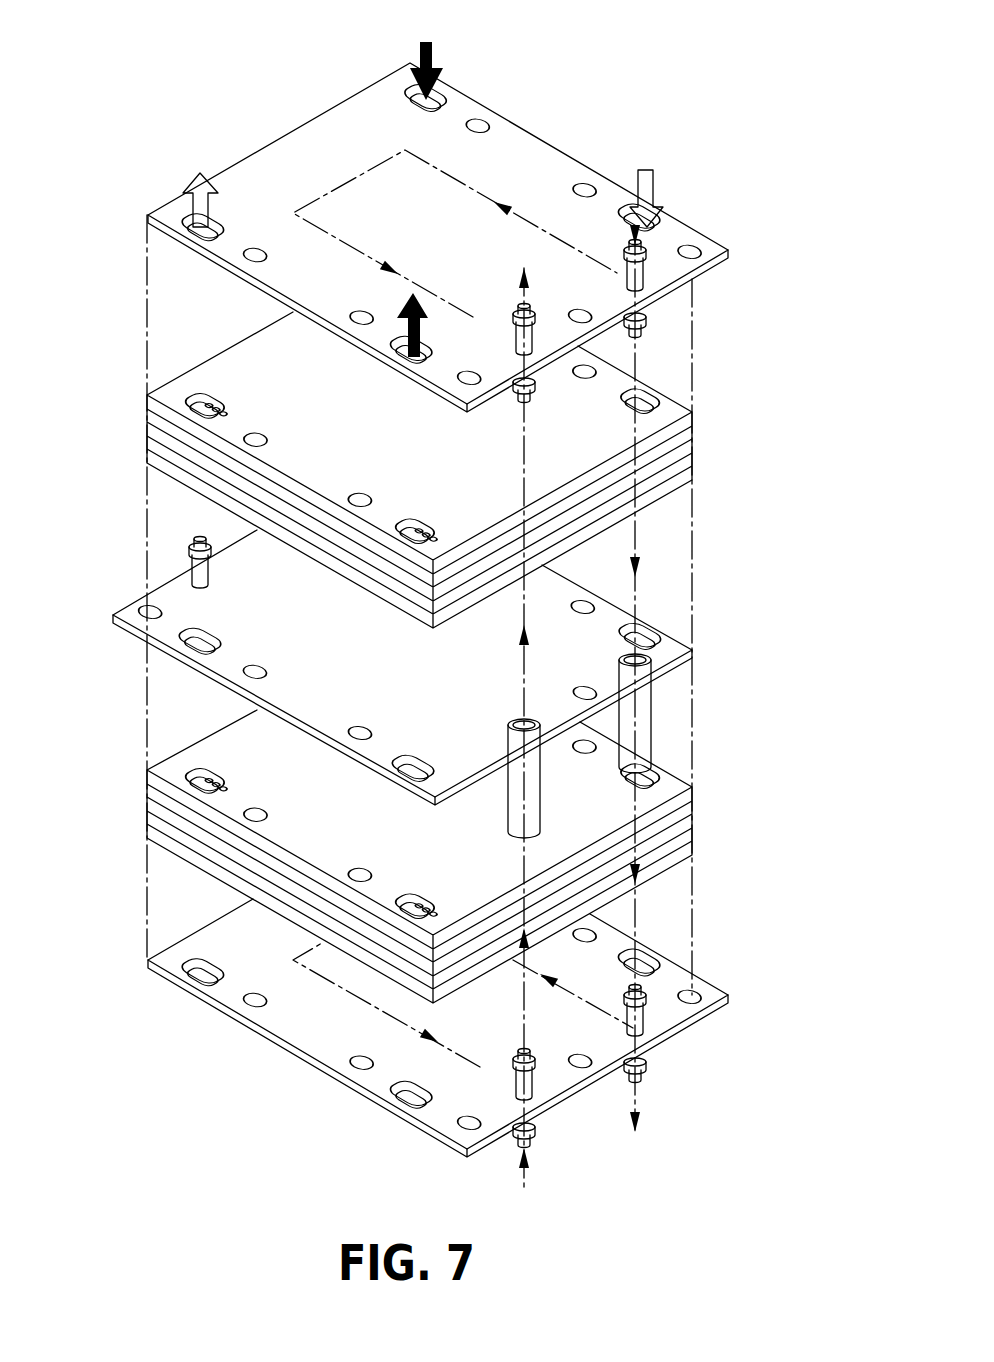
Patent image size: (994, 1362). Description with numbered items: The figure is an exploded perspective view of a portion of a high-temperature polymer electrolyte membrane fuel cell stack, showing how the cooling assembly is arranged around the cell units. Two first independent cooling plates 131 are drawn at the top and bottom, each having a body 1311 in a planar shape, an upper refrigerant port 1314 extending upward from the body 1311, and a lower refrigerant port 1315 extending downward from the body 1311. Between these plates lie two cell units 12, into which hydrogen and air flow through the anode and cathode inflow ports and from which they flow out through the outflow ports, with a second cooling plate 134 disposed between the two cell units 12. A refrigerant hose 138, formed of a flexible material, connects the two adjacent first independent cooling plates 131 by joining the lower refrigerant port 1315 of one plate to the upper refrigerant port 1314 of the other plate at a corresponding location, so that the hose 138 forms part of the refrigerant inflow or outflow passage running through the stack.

The first independent cooling plate 131 is at (186, 258).
The body 1311 is at (297, 137).
The cell unit 12 is at (147, 388).
The second cooling plate 134 is at (154, 657).
The refrigerant hose 138 is at (647, 742).
The upper refrigerant port 1314 is at (533, 310).
The lower refrigerant port 1315 is at (533, 394).